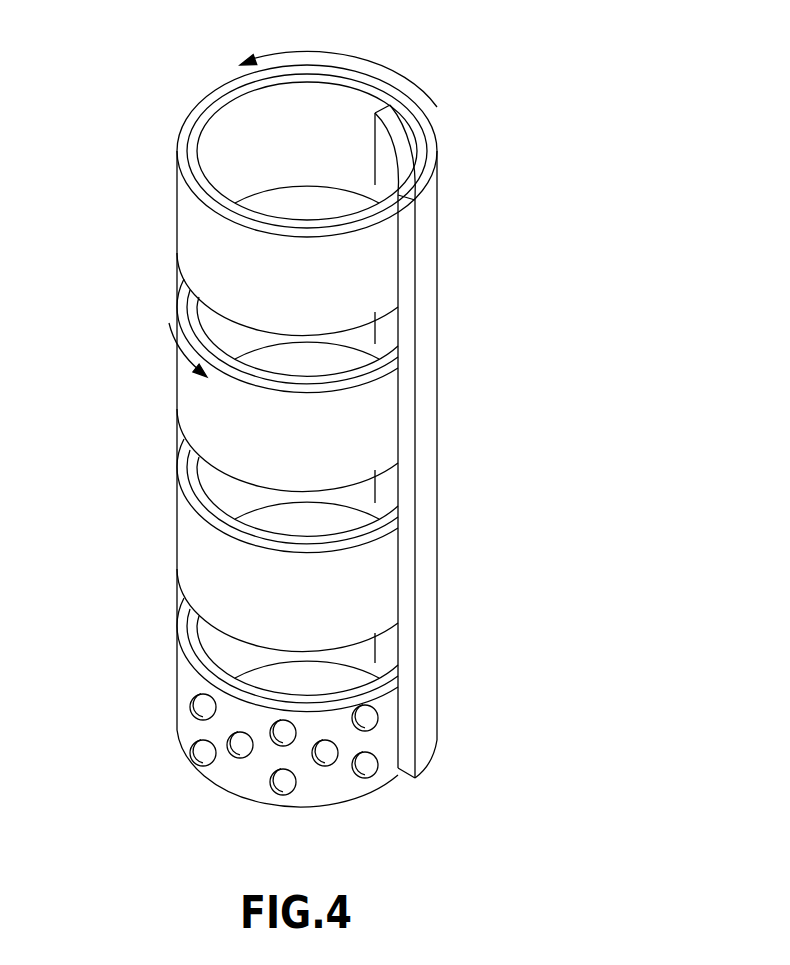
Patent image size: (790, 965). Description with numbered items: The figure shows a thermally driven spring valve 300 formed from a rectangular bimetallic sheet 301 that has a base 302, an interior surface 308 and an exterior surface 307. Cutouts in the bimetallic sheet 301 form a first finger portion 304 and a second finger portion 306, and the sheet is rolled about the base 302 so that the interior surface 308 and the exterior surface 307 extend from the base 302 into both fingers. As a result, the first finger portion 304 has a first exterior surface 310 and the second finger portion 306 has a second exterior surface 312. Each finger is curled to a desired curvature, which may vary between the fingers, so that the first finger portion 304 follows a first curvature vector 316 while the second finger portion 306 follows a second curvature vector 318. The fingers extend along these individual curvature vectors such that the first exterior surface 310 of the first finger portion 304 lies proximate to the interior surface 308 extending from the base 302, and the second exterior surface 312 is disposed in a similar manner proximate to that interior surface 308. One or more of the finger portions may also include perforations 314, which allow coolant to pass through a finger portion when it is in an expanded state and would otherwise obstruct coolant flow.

The thermally driven spring valve 300 is at (529, 91).
The bimetallic sheet 301 is at (407, 707).
The base 302 is at (437, 162).
The first finger portion 304 is at (164, 145).
The second finger portion 306 is at (164, 316).
The exterior surface 307 is at (427, 257).
The interior surface 308 is at (412, 167).
The first exterior surface 310 is at (413, 165).
The second exterior surface 312 is at (410, 372).
The perforations 314 is at (200, 752).
The first curvature vector 316 is at (338, 60).
The second curvature vector 318 is at (178, 322).